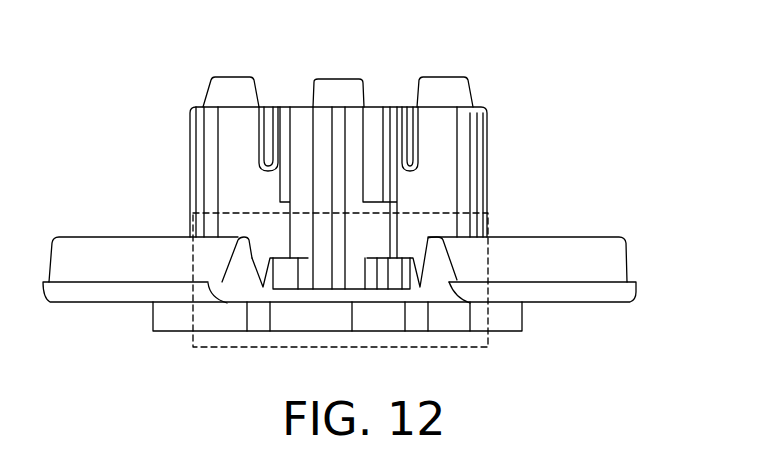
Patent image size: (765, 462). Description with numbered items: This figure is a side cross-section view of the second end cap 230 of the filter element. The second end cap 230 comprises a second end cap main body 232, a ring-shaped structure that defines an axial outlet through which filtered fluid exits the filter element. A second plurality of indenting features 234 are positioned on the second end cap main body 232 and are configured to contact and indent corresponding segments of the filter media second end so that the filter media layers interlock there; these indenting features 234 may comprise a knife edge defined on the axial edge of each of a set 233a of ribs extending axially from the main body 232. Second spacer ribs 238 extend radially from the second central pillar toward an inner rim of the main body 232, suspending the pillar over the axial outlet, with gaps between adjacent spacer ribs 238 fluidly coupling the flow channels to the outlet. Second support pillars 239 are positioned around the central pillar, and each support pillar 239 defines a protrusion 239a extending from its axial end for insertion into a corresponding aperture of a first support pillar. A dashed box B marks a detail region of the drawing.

The second end cap 230 is at (503, 93).
The second end cap main body 232 is at (505, 290).
The set of the plurality of ribs 233a is at (336, 262).
The second plurality of indenting features 234 is at (336, 262).
The second spacer ribs 238 is at (190, 182).
The second support pillars 239 is at (317, 130).
The protrusion 239a is at (350, 84).
The detail region B is at (489, 229).